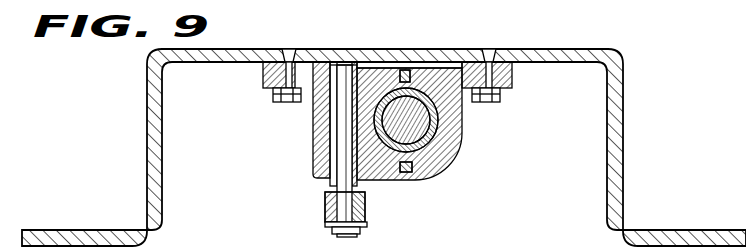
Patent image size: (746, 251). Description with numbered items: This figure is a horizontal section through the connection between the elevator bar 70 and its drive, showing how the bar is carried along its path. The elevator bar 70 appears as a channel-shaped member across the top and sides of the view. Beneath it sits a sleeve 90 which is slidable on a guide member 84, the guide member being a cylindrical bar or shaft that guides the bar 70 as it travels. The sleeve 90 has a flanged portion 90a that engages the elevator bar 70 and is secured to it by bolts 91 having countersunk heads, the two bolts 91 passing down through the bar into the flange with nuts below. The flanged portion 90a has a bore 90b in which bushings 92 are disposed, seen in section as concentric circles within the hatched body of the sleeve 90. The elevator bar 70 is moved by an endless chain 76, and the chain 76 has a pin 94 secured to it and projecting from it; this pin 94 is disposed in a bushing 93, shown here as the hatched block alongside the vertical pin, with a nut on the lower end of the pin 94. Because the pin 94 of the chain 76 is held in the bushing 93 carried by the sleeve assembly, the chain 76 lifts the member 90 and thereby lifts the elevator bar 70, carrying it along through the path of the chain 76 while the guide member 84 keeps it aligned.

The elevator bar 70 is at (88, 229).
The endless chain 76 is at (333, 226).
The guide member 84 is at (429, 181).
The sleeve 90 is at (456, 157).
The flanged portion 90a is at (312, 130).
The bore 90b is at (458, 127).
The bolts 91 is at (292, 50).
The bushings 92 is at (437, 166).
The bushing 93 is at (313, 103).
The pin 94 is at (343, 174).